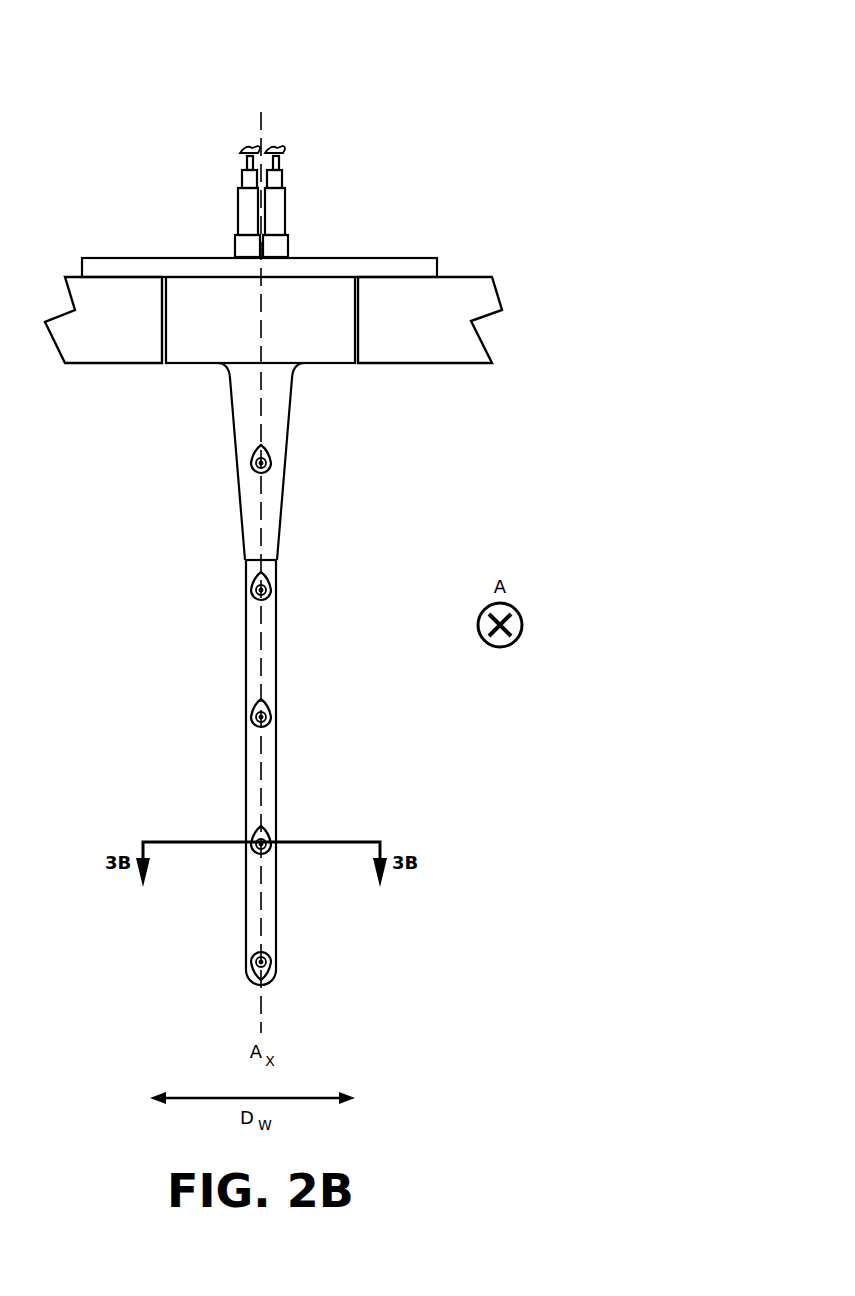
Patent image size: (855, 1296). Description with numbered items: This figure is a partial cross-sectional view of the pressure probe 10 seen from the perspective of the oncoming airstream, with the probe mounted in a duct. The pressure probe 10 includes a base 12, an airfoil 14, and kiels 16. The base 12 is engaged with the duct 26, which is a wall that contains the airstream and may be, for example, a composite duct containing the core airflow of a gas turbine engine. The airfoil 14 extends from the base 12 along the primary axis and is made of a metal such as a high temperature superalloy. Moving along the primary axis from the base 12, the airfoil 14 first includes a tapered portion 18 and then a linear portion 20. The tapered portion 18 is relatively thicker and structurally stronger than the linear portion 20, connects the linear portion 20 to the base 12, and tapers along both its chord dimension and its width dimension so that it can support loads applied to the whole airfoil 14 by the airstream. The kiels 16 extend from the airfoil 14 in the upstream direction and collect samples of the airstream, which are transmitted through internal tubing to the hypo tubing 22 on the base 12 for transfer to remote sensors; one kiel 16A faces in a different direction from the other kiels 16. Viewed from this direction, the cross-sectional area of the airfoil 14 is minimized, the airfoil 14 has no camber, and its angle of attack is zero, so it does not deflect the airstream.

The pressure probe 10 is at (434, 128).
The base 12 is at (387, 257).
The airfoil 14 is at (306, 653).
The kiels 16 is at (273, 715).
The kiel 16A is at (272, 958).
The tapered portion 18 is at (278, 430).
The linear portion 20 is at (243, 690).
The hypo tubing 22 is at (250, 217).
The duct 26 is at (273, 320).